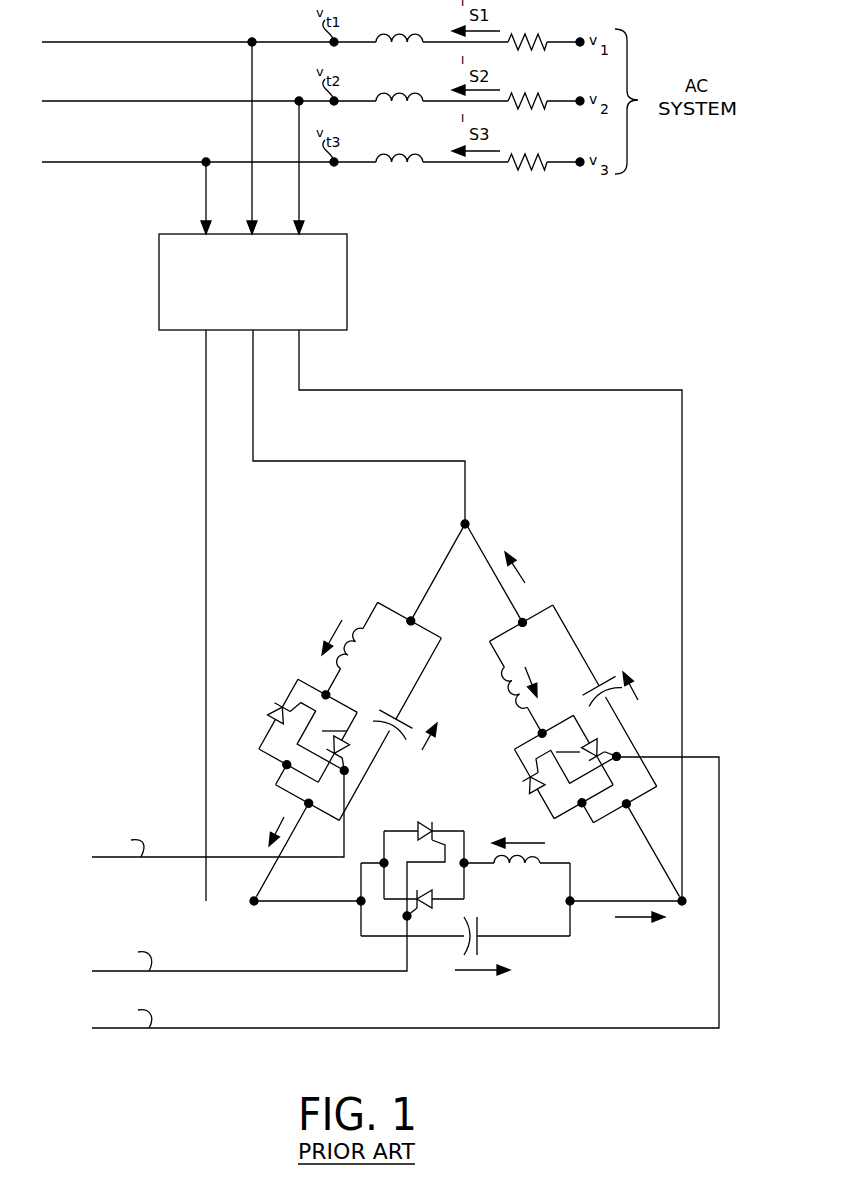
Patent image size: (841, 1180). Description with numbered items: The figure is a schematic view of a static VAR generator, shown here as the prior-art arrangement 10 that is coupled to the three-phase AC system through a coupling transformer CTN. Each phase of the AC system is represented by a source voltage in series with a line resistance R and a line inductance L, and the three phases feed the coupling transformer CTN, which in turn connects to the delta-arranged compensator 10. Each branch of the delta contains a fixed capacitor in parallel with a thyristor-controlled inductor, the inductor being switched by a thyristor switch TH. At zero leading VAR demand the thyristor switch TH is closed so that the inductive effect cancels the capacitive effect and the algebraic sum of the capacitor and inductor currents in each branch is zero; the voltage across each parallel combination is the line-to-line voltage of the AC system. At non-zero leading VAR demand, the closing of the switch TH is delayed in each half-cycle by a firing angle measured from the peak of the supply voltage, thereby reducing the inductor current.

The static VAR compensator (thyristor-controlled delta-connected compensator circuit 10 is at (407, 778).
The coupling transformer CTN is at (347, 247).
The AC system line inductance L is at (405, 30).
The AC system line resistance R is at (526, 35).
The thyristor switch TH is at (450, 887).